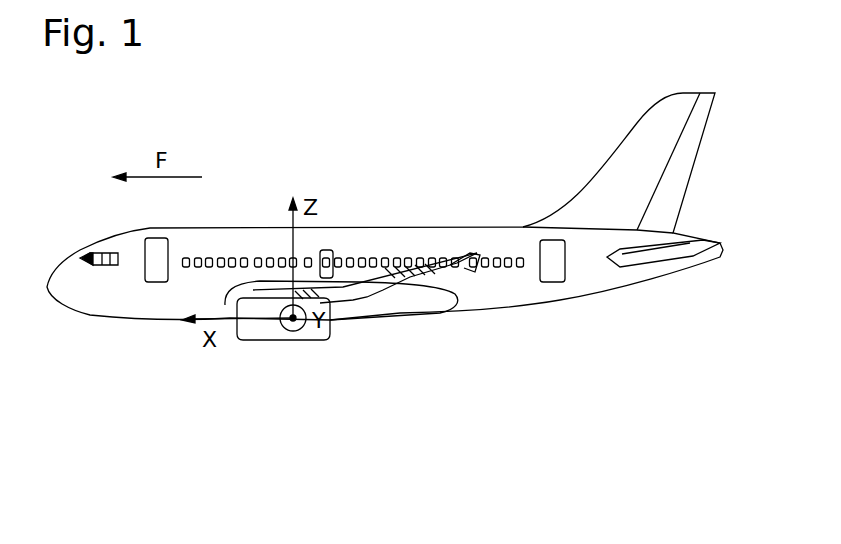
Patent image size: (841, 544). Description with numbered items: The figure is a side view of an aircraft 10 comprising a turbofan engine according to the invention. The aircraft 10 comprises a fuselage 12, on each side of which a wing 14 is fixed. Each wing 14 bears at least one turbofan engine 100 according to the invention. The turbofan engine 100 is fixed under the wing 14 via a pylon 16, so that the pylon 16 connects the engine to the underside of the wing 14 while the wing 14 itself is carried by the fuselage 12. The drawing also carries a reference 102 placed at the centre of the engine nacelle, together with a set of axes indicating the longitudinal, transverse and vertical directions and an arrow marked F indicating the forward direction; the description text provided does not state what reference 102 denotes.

The aircraft 10 is at (509, 163).
The fuselage 12 is at (523, 292).
The wing 14 is at (385, 280).
The pylon 16 is at (338, 300).
The turbofan engine 100 is at (204, 367).
The engine center axis 102 is at (272, 320).